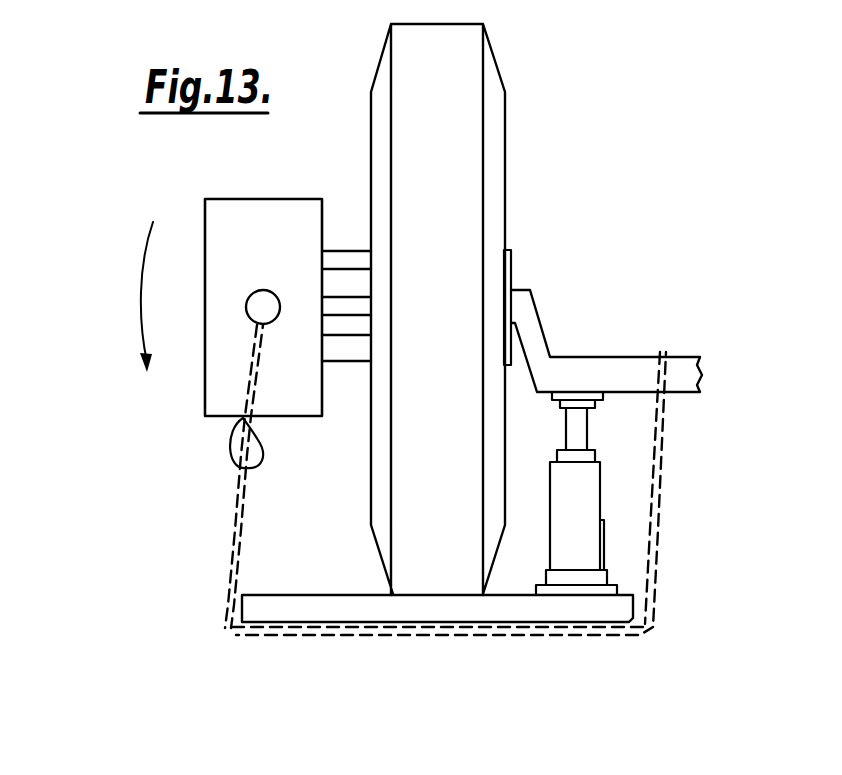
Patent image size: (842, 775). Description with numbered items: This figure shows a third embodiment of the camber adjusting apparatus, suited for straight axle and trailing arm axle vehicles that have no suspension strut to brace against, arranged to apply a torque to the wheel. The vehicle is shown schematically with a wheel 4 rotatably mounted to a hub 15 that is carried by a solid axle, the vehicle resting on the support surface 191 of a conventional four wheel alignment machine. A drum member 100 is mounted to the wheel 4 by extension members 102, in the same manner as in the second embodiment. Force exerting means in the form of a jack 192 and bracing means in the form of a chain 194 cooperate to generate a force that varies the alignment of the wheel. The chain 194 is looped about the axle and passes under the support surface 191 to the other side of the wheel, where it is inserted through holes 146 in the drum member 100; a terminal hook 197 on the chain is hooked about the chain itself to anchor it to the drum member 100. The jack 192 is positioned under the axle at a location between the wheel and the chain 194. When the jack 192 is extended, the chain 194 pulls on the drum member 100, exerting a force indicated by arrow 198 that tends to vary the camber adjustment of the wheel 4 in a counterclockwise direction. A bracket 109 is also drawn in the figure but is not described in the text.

The wheel 4 is at (463, 133).
The hub 15 is at (513, 275).
The drum member 100 is at (258, 192).
The extension members 102 is at (348, 256).
The support bracket arm 109 is at (608, 368).
The holes 146 is at (268, 291).
The support surface 191 is at (326, 607).
The jack 192 is at (563, 505).
The chain 194 is at (653, 524).
The terminal hook 197 is at (228, 452).
The arrow 198 is at (142, 288).